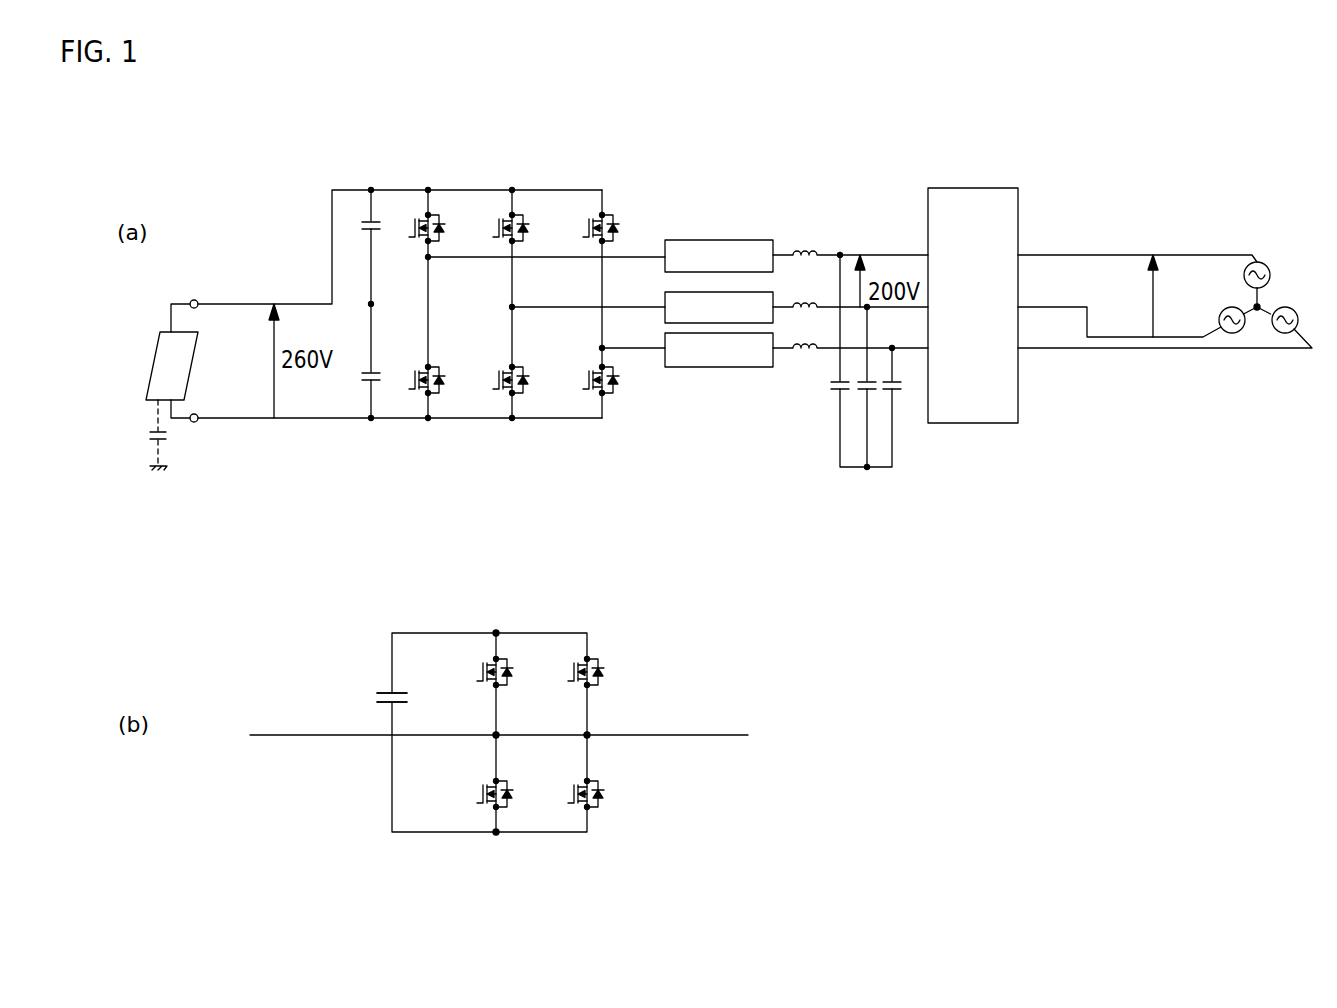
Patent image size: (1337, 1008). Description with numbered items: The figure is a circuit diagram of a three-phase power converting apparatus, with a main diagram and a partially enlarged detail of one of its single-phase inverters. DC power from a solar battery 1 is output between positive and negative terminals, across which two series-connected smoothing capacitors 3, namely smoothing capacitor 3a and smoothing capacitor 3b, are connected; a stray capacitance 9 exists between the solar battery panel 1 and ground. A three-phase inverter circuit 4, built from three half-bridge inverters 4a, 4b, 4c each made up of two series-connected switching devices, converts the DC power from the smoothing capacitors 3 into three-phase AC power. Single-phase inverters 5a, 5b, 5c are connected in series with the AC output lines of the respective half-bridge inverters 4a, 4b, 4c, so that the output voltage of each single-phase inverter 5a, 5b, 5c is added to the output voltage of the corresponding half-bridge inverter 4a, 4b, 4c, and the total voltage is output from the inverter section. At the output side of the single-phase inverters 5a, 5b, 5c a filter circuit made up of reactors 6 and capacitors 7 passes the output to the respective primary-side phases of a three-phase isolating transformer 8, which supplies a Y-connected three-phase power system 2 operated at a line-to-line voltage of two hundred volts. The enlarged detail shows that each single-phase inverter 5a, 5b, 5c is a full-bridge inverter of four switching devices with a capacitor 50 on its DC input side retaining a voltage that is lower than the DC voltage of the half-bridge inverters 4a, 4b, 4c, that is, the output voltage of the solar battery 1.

The solar battery 1 is at (150, 372).
The three-phase power system 2 is at (1271, 270).
The smoothing capacitors 3 is at (413, 133).
The smoothing capacitor 3a is at (357, 222).
The smoothing capacitor 3b is at (374, 370).
The three-phase inverter circuit 4 is at (672, 133).
The half-bridge inverter 4a is at (445, 423).
The half-bridge inverter 4b is at (527, 430).
The half-bridge inverter 4c is at (619, 433).
The single-phase inverter 5a is at (718, 240).
The single-phase inverter 5b is at (777, 292).
The single-phase inverter 5c is at (717, 367).
The reactors 6 is at (801, 358).
The capacitors 7 is at (900, 388).
The three-phase isolating transformer 8 is at (969, 188).
The stray capacitance 9 is at (172, 440).
The capacitor 50 is at (386, 692).